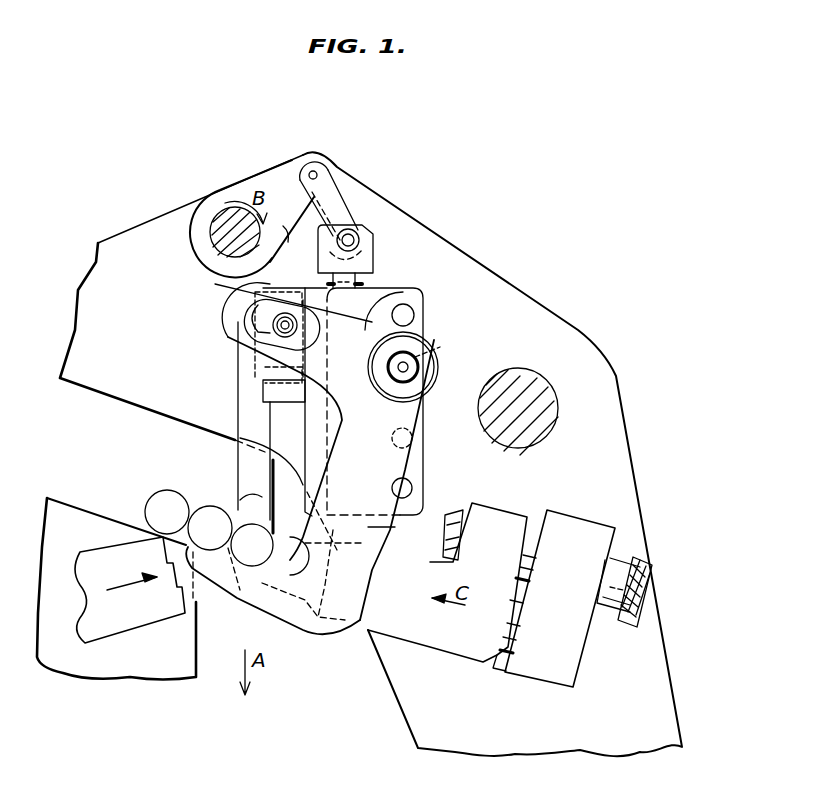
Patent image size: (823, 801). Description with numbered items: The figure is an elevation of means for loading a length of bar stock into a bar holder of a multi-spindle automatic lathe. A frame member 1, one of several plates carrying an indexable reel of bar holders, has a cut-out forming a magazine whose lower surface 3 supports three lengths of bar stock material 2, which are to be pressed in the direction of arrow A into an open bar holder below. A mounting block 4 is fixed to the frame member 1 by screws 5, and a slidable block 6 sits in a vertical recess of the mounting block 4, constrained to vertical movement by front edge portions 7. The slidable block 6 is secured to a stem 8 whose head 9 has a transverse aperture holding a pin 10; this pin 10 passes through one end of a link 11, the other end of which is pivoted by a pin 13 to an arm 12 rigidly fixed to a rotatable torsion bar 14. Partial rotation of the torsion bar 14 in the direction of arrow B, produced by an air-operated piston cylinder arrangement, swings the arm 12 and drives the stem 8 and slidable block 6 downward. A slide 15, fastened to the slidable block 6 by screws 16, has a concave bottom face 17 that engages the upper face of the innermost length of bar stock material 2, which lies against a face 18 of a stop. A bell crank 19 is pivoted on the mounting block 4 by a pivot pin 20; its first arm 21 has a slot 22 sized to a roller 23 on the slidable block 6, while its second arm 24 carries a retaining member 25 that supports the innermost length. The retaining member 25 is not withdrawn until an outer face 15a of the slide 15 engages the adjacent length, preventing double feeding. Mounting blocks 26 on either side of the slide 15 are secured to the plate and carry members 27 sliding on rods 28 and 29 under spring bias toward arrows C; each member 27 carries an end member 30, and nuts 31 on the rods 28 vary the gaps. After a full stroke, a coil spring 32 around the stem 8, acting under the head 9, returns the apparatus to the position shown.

The frame member 1 is at (620, 460).
The bar stock material 2 is at (182, 502).
The lower surface 3 is at (132, 520).
The mounting block 4 is at (418, 456).
The screws 5 is at (414, 314).
The slidable block 6 is at (274, 396).
The front edge portions 7 is at (310, 438).
The stem 8 is at (376, 273).
The head 9 is at (375, 254).
The pin 10 is at (355, 237).
The link 11 is at (330, 202).
The arm 12 is at (254, 218).
The pin 13 is at (322, 166).
The torsion bar 14 is at (222, 233).
The slide 15 is at (240, 361).
The outer face 15a is at (236, 448).
The screws 16 is at (255, 289).
The concave bottom face 17 is at (240, 498).
The face 18 is at (280, 514).
The bell crank 19 is at (413, 410).
The pivot pin 20 is at (430, 358).
The first arm 21 is at (392, 292).
The slot 22 is at (250, 320).
The roller 23 is at (273, 330).
The second arm 24 is at (395, 527).
The retaining member 25 is at (246, 586).
The mounting blocks 26 is at (580, 523).
The members 27 is at (490, 525).
The rod 28 is at (527, 547).
The rod 29 is at (497, 662).
The end member 30 is at (208, 588).
The nuts 31 is at (623, 570).
The coil spring 32 is at (328, 286).